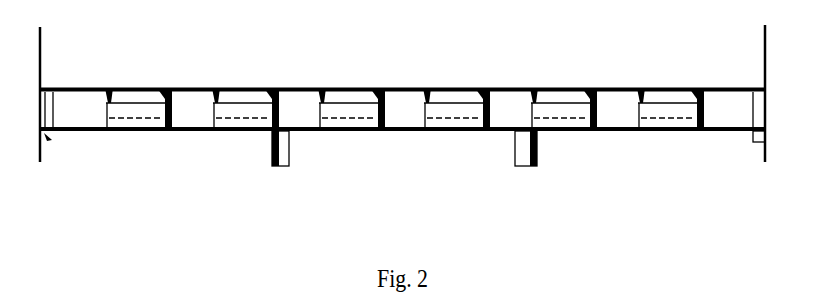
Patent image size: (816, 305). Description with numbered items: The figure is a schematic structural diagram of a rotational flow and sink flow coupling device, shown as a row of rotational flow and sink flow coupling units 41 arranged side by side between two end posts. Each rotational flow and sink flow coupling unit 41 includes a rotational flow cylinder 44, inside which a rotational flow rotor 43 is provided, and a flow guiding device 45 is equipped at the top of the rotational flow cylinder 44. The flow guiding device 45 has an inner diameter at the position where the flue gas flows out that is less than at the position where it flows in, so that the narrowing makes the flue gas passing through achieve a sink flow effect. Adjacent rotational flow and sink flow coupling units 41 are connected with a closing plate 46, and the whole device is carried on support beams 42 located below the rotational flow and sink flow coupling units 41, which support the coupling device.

The rotational flow and sink flow coupling unit 41 is at (143, 87).
The support beam 42 is at (48, 138).
The rotational flow rotor 43 is at (352, 119).
The rotational flow cylinder 44 is at (425, 106).
The flow guiding device 45 is at (275, 98).
The closing plate 46 is at (618, 127).